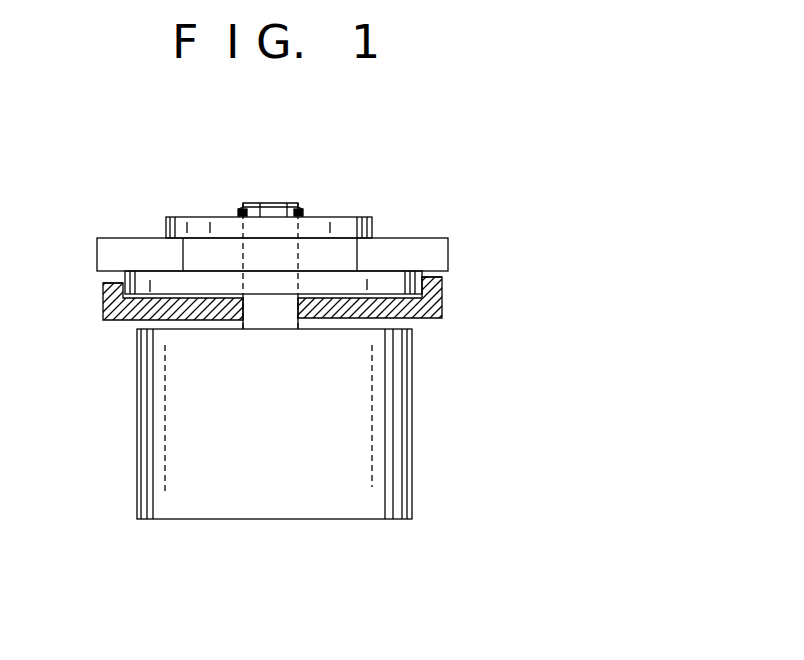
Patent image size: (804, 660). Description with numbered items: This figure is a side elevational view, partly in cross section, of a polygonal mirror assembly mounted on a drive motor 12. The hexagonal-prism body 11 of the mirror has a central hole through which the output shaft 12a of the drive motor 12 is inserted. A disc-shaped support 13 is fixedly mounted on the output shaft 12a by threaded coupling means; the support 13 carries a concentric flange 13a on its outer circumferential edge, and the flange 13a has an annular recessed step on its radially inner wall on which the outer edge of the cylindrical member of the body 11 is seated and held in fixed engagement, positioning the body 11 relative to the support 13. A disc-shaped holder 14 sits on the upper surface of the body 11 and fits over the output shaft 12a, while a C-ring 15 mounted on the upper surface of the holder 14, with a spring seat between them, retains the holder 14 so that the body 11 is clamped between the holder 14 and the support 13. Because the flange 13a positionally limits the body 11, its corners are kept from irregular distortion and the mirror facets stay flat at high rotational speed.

The body 11 is at (423, 247).
The drive motor 12 is at (385, 455).
The output shaft 12a is at (255, 208).
The support 13 is at (412, 312).
The flange 13a is at (107, 284).
The holder 14 is at (343, 217).
The C-ring 15 is at (297, 212).